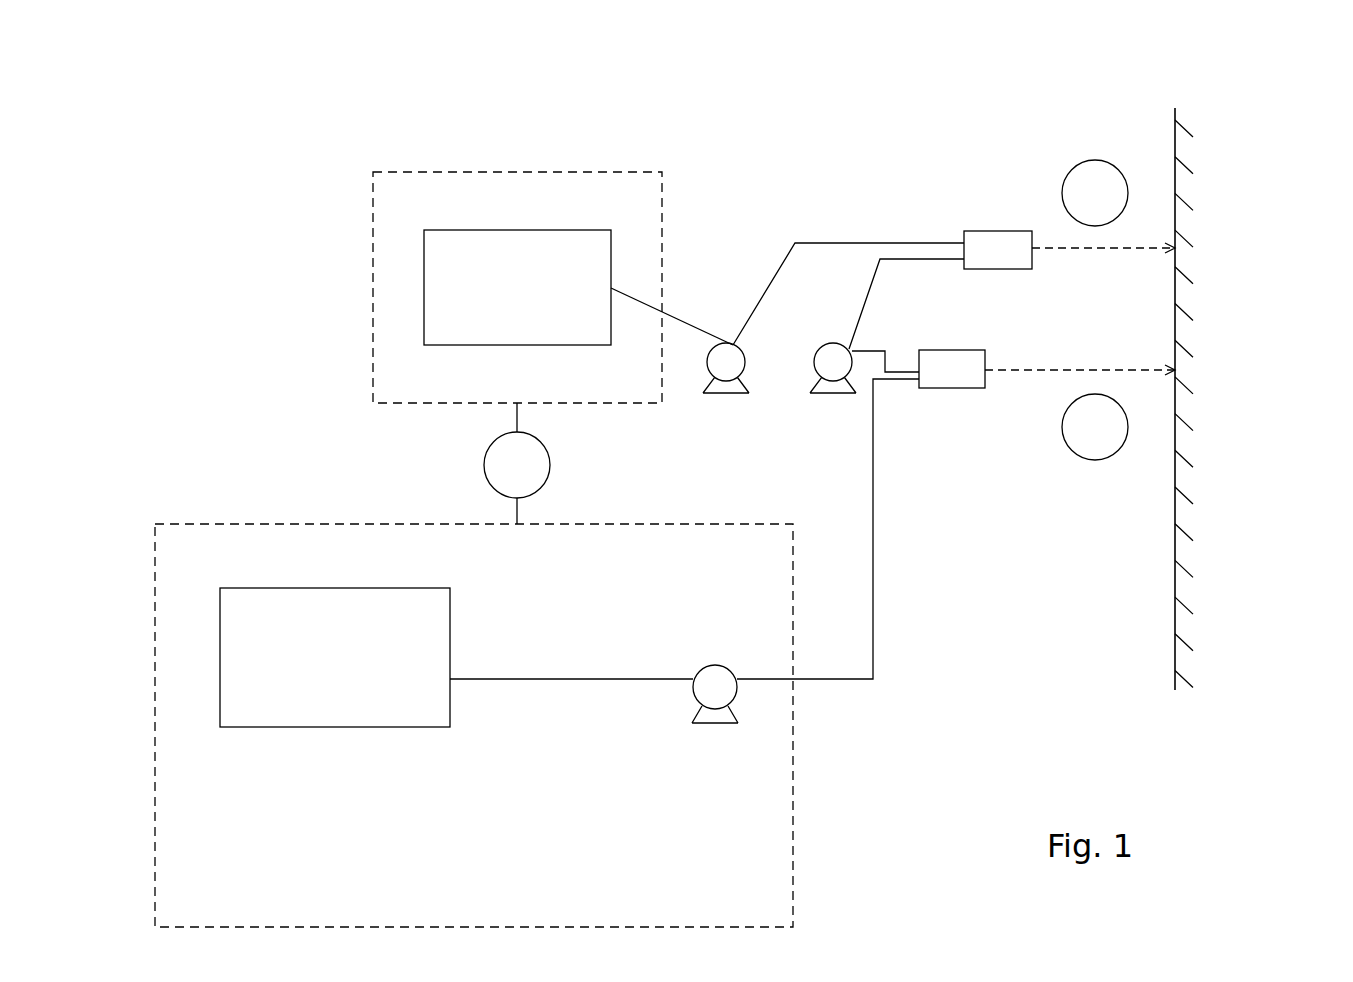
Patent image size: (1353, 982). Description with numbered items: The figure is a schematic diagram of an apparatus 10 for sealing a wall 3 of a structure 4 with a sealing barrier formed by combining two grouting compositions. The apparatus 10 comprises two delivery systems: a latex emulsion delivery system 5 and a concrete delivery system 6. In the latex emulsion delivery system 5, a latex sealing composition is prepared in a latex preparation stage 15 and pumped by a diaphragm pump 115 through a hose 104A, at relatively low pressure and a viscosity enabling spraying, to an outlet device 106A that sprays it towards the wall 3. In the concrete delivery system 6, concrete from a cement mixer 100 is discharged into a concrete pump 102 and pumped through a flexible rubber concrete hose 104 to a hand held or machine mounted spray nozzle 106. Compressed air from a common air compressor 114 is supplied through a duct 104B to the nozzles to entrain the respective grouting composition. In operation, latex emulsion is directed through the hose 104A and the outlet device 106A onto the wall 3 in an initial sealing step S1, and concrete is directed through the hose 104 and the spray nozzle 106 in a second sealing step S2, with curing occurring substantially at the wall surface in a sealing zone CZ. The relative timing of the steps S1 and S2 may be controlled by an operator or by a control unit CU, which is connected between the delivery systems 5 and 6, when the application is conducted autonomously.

The apparatus 10 is at (239, 378).
The latex emulsion delivery system 5 is at (538, 230).
The latex preparation stage 15 is at (507, 313).
The control unit CU is at (517, 463).
The concrete delivery system 6 is at (334, 853).
The cement mixer 100 is at (320, 672).
The concrete pump 102 is at (690, 695).
The concrete hose 104 is at (874, 468).
The hose 104A is at (767, 285).
The duct 104B is at (878, 280).
The spray nozzle 106 is at (948, 388).
The outlet device 106A is at (999, 229).
The air compressor 114 is at (833, 394).
The diaphragm pump 115 is at (723, 394).
The wall 3 is at (1180, 475).
The structure 4 is at (1298, 340).
The initial sealing step S1 is at (1103, 206).
The second sealing step S2 is at (1080, 412).
The sealing zone CZ is at (1180, 88).